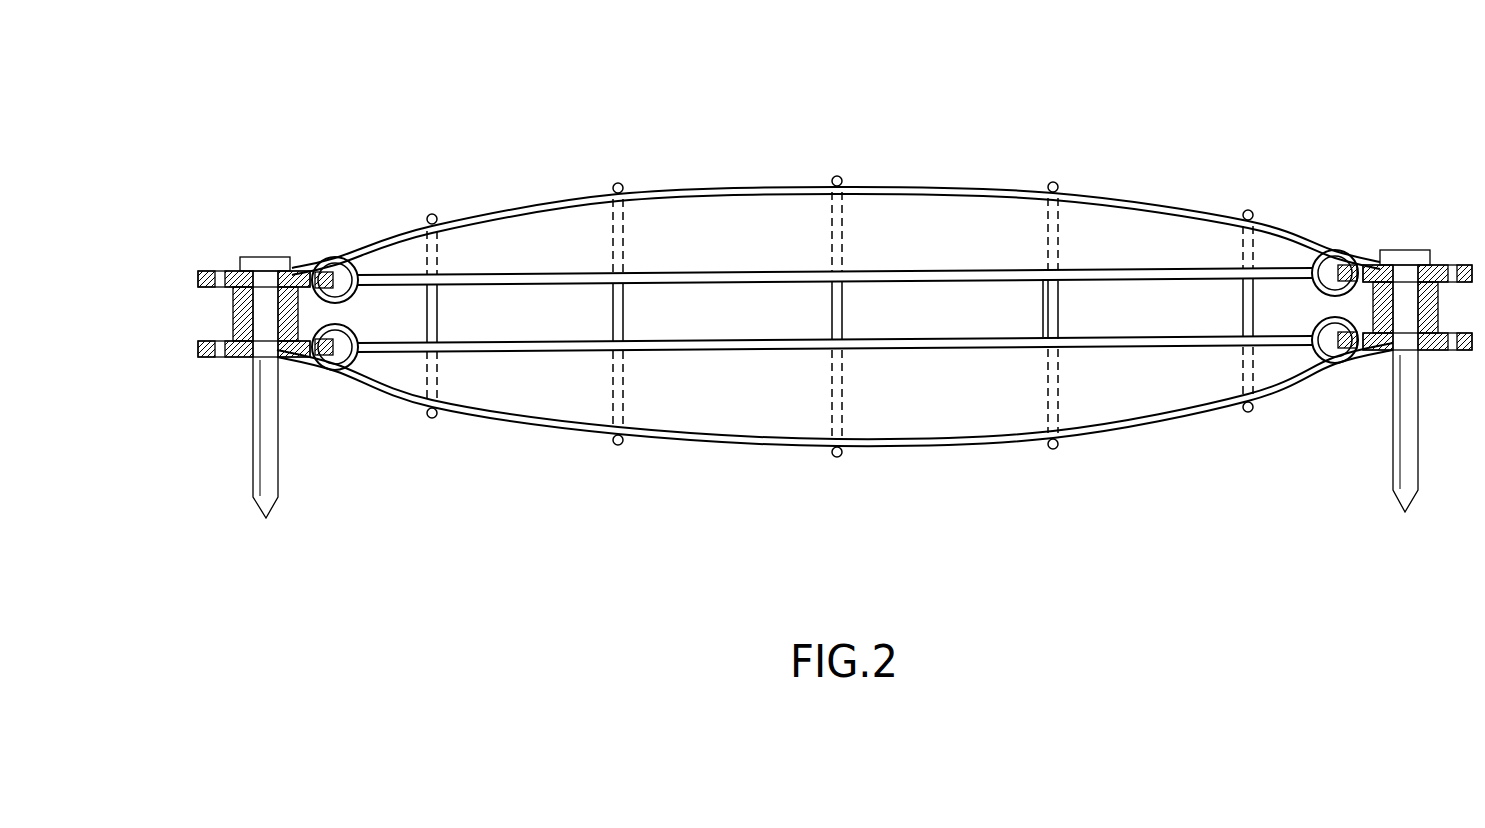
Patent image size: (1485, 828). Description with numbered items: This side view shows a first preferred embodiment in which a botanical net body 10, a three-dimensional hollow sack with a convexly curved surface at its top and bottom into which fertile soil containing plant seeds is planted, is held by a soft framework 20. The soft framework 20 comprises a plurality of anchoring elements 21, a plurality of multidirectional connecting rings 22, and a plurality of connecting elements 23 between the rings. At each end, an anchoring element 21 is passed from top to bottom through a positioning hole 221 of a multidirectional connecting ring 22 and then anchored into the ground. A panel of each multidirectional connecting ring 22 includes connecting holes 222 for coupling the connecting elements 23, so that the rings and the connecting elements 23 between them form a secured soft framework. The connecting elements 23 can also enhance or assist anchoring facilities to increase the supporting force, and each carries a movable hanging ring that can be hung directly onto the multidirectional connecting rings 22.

The botanical net body 10 is at (792, 295).
The soft framework 20 is at (740, 402).
The anchoring element 21 is at (275, 483).
The multidirectional connecting ring 22 is at (258, 344).
The positioning hole 221 is at (233, 295).
The connecting hole 222 is at (334, 343).
The connecting element between the rings 23 is at (530, 352).